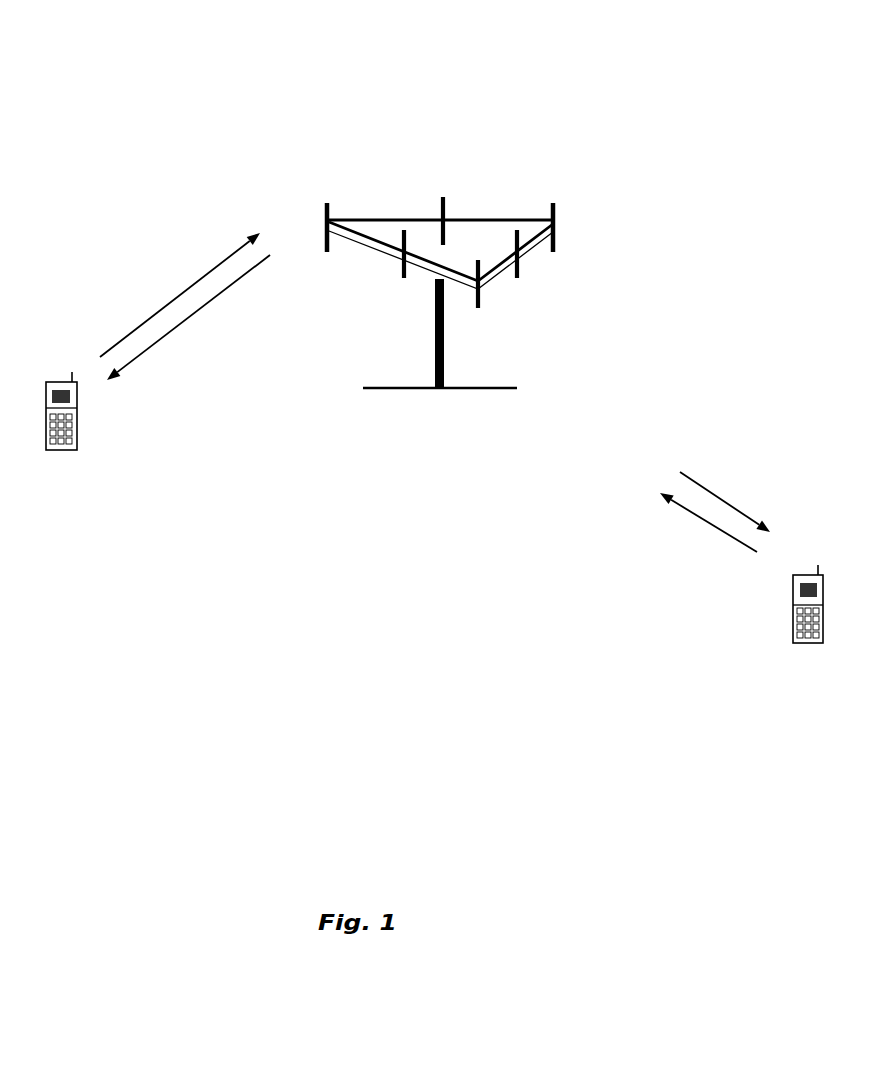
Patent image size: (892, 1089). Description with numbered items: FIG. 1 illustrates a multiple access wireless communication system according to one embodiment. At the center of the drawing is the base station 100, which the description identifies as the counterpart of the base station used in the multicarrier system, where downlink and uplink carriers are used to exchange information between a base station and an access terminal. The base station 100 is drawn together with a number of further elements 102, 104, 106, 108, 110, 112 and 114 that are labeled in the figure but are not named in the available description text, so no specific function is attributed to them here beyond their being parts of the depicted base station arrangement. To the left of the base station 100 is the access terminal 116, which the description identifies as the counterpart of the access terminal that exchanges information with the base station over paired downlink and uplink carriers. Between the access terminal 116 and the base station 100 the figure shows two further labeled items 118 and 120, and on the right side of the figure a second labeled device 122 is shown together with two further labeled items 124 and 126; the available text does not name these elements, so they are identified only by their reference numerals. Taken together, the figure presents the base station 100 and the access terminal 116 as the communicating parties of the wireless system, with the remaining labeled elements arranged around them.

The base station 100 is at (410, 388).
The antenna support frame 102 is at (440, 254).
The antenna 104 is at (483, 305).
The antenna 106 is at (522, 280).
The antenna 108 is at (560, 245).
The antenna 110 is at (443, 197).
The antenna 112 is at (332, 213).
The antenna 114 is at (403, 278).
The access terminal 116 is at (60, 380).
The uplink signal 118 is at (180, 297).
The downlink signal 120 is at (200, 312).
The mobile station 122 is at (808, 575).
The downlink signal 124 is at (695, 513).
The uplink signal 126 is at (735, 508).